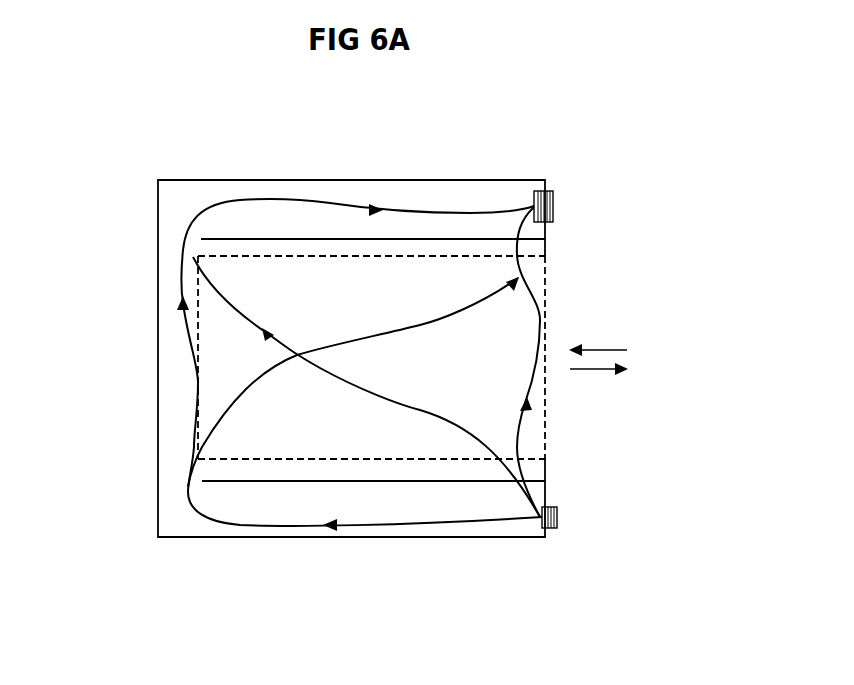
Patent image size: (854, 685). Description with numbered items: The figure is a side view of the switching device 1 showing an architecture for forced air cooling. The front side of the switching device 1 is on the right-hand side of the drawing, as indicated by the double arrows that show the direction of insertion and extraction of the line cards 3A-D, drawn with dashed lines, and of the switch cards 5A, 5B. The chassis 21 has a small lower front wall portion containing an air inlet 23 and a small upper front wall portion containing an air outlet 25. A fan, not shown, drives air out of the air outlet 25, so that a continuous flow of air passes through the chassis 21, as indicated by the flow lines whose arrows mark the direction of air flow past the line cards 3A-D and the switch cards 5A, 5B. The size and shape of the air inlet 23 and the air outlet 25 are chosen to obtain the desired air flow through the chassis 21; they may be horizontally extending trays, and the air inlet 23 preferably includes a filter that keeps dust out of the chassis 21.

The switching device 1 is at (641, 129).
The chassis 21 is at (158, 450).
The line cards 3A-D is at (313, 255).
The switch card 5A is at (460, 239).
The switch card 5B is at (407, 482).
The air outlet 25 is at (553, 209).
The air inlet 23 is at (558, 518).